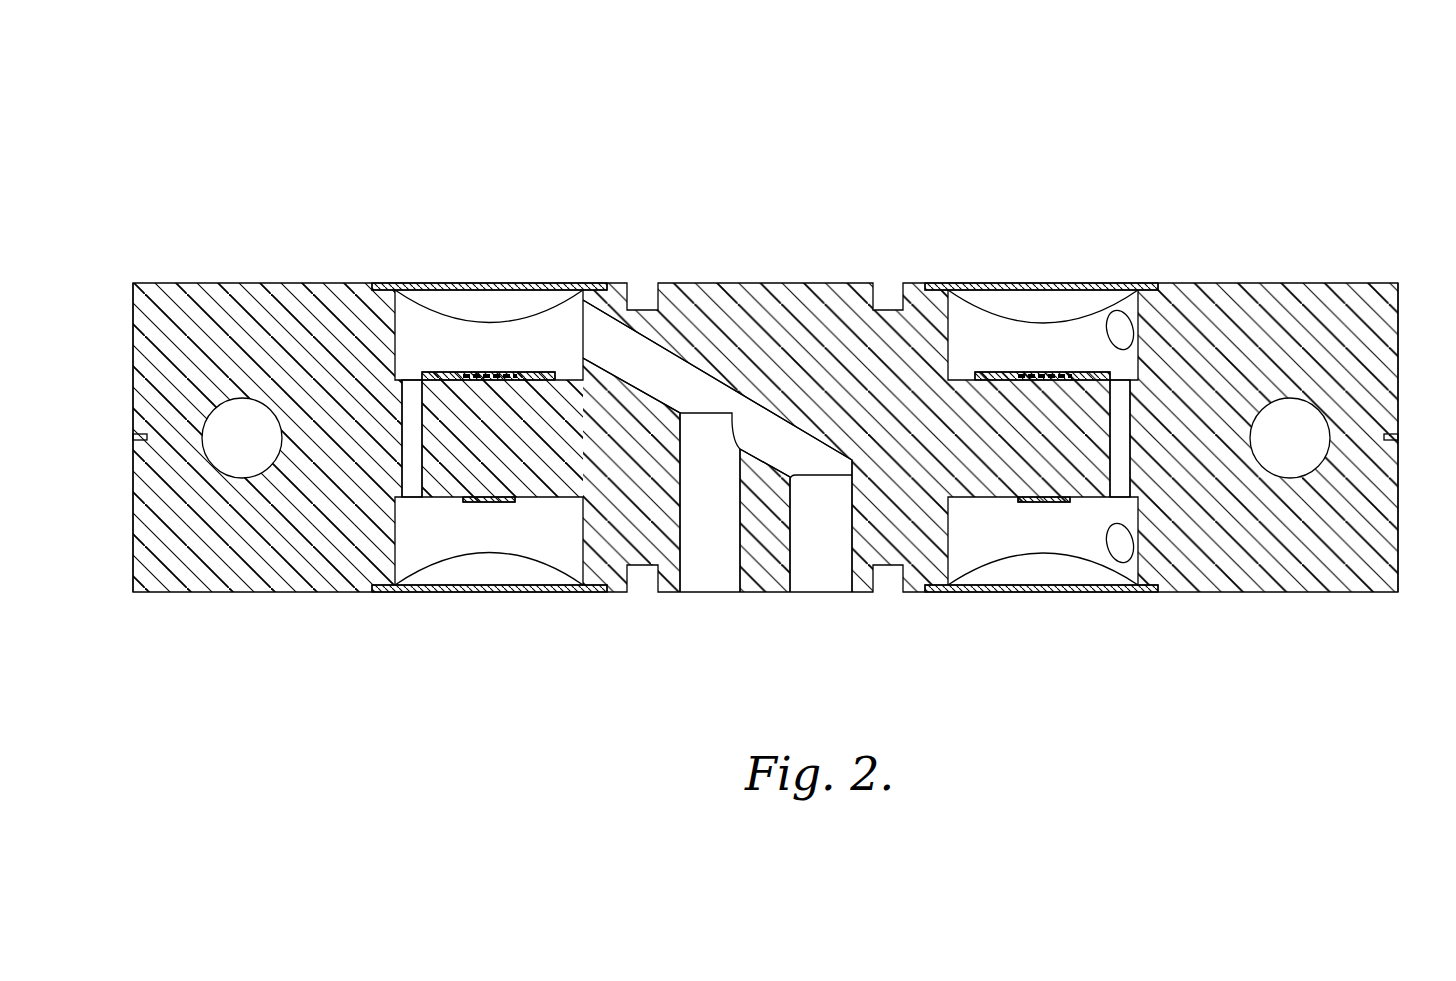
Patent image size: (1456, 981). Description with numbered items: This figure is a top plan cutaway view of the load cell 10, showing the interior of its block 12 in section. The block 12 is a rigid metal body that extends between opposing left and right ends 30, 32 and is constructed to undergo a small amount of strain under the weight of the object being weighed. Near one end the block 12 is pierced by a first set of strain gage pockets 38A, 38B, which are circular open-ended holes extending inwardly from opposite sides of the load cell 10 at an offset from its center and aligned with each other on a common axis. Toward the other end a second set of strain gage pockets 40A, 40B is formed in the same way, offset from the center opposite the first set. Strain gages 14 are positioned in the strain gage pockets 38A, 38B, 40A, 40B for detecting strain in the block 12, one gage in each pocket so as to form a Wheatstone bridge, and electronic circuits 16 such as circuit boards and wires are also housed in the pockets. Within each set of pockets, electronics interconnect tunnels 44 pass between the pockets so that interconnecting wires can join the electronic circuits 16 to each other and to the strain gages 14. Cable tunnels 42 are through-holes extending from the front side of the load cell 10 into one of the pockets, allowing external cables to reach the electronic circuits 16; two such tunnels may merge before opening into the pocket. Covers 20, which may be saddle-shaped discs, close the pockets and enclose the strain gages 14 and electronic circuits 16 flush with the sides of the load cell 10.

The load cell 10 is at (356, 96).
The block 12 is at (260, 293).
The strain gages 14 is at (478, 375).
The electronic circuits 16 is at (540, 375).
The covers 20 is at (580, 292).
The left end 30 is at (104, 334).
The right end 32 is at (1418, 328).
The first strain gage pocket 38A is at (1005, 568).
The first strain gage pocket 38B is at (1119, 288).
The second strain gage pocket 40A is at (441, 562).
The second strain gage pocket 40B is at (439, 322).
The cable tunnels 42 is at (828, 570).
The electronics interconnect tunnels 44 is at (412, 485).